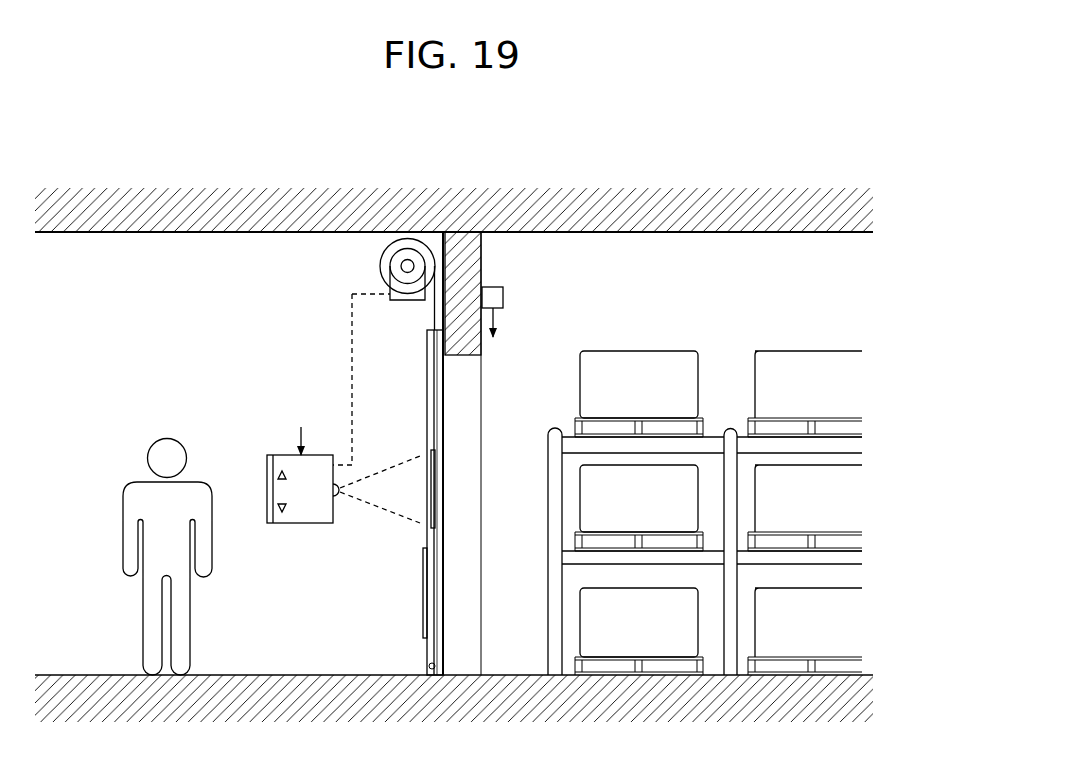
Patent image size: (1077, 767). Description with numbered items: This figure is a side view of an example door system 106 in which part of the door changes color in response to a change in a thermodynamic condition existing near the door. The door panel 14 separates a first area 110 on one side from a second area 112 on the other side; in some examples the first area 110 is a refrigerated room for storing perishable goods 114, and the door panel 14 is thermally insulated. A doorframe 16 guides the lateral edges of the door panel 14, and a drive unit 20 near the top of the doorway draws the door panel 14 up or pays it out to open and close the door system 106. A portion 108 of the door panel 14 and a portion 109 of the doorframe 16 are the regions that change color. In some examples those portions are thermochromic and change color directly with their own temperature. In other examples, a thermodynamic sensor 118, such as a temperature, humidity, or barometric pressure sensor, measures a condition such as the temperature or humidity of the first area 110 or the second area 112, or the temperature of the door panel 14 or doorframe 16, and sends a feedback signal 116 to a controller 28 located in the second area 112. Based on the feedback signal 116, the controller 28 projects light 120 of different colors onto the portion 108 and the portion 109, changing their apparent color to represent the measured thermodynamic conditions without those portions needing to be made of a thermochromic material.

The door system 106 is at (172, 316).
The door panel 14 is at (437, 418).
The doorframe 16 is at (427, 367).
The drive unit 20 is at (413, 302).
The controller 28 is at (263, 493).
The portion of the door panel 108 is at (431, 478).
The portion of the doorframe 109 is at (423, 600).
The first area 110 is at (537, 605).
The second area 112 is at (348, 603).
The perishable goods 114 is at (642, 350).
The feedback signal 116 is at (497, 317).
The thermodynamic sensor 118 is at (503, 297).
The light 120 is at (369, 509).